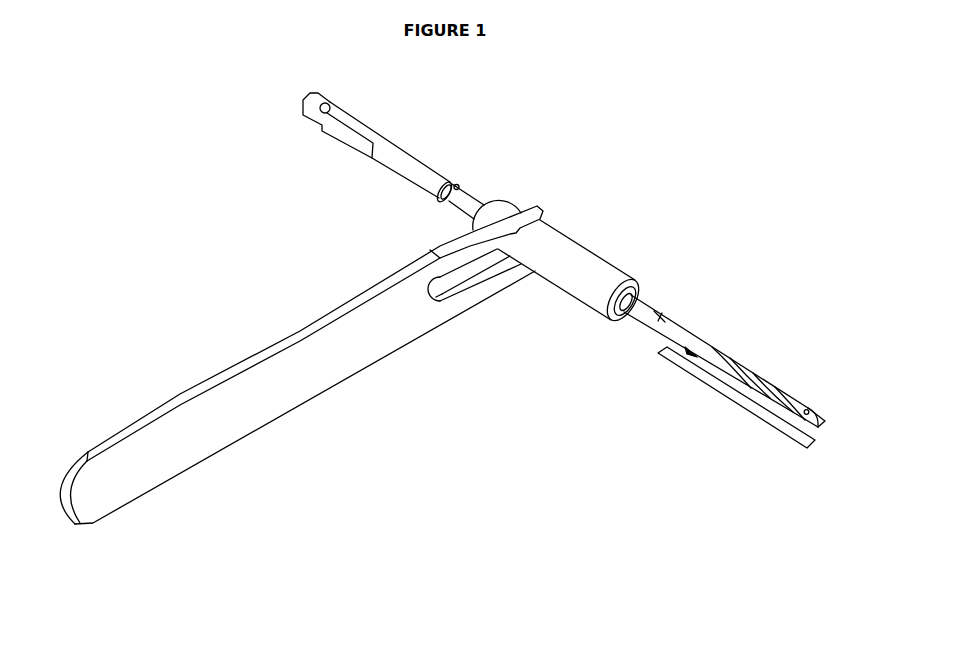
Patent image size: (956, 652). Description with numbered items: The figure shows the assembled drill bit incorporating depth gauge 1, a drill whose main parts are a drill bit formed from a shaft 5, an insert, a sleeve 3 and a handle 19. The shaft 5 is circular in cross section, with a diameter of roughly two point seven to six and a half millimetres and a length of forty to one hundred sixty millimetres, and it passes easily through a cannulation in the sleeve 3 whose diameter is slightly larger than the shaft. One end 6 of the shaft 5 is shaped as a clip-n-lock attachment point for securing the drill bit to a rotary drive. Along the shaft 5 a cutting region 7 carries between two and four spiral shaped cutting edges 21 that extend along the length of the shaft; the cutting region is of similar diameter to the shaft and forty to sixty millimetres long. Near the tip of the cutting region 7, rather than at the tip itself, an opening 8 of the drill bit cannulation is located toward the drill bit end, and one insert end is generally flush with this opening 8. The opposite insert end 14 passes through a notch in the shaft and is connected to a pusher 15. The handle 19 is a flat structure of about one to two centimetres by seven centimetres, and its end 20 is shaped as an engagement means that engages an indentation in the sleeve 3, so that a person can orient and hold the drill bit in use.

The drill bit incorporating depth gauge 1 is at (435, 395).
The sleeve 3 is at (628, 265).
The shaft 5 is at (637, 315).
The end of shaft 6 is at (303, 99).
The cutting region 7 is at (723, 395).
The opening 8 is at (809, 410).
The insert end 14 is at (693, 312).
The pusher 15 is at (456, 184).
The handle 19 is at (195, 378).
The end of handle 20 is at (480, 278).
The spiral shaped cutting edges 21 is at (782, 393).